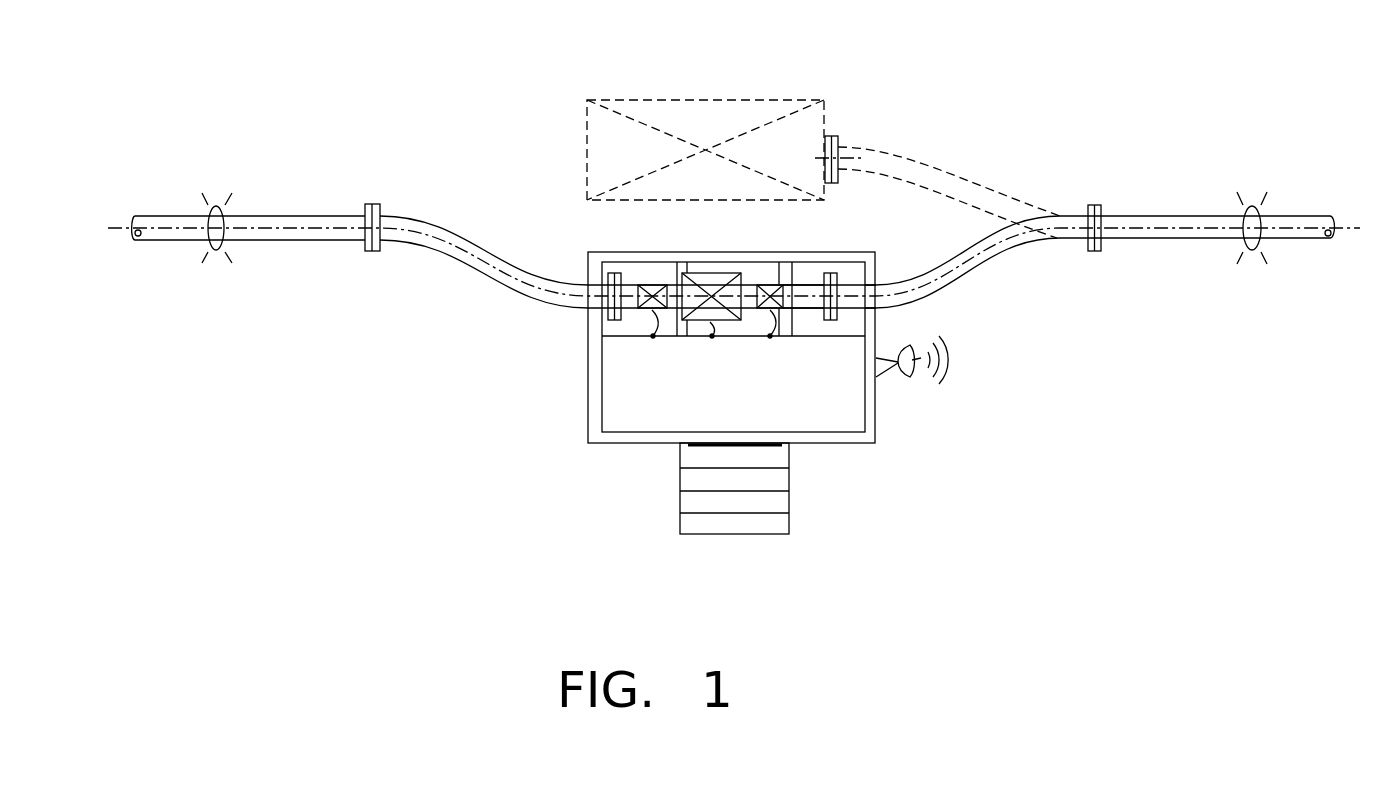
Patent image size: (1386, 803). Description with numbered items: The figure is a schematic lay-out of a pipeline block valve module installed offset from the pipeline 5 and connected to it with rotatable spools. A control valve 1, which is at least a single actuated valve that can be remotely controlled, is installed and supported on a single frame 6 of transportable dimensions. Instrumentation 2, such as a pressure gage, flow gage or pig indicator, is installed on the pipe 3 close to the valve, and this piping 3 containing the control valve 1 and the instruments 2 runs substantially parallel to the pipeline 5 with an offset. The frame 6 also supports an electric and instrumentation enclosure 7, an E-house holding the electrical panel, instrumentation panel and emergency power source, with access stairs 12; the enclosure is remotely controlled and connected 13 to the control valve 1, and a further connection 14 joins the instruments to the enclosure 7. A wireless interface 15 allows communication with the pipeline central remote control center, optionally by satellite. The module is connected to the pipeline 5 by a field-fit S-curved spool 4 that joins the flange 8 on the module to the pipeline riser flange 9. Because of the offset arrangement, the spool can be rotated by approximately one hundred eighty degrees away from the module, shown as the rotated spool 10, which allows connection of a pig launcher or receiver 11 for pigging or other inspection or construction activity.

The control valve 1 is at (711, 275).
The instrumentation 2 is at (771, 285).
The pipe 3 is at (809, 285).
The spool 4 is at (918, 270).
The pipeline 5 is at (1125, 215).
The single frame 6 is at (877, 318).
The electric and instrumentation enclosure 7 is at (612, 367).
The flange 8 is at (830, 320).
The pipeline riser flange 9 is at (1093, 205).
The rotated spool 10 is at (977, 190).
The pig launcher or receiver 11 is at (772, 99).
The access stairs 12 is at (777, 459).
The connection 13 is at (713, 337).
The sensor wire 14 is at (770, 337).
The wireless interface 15 is at (915, 372).